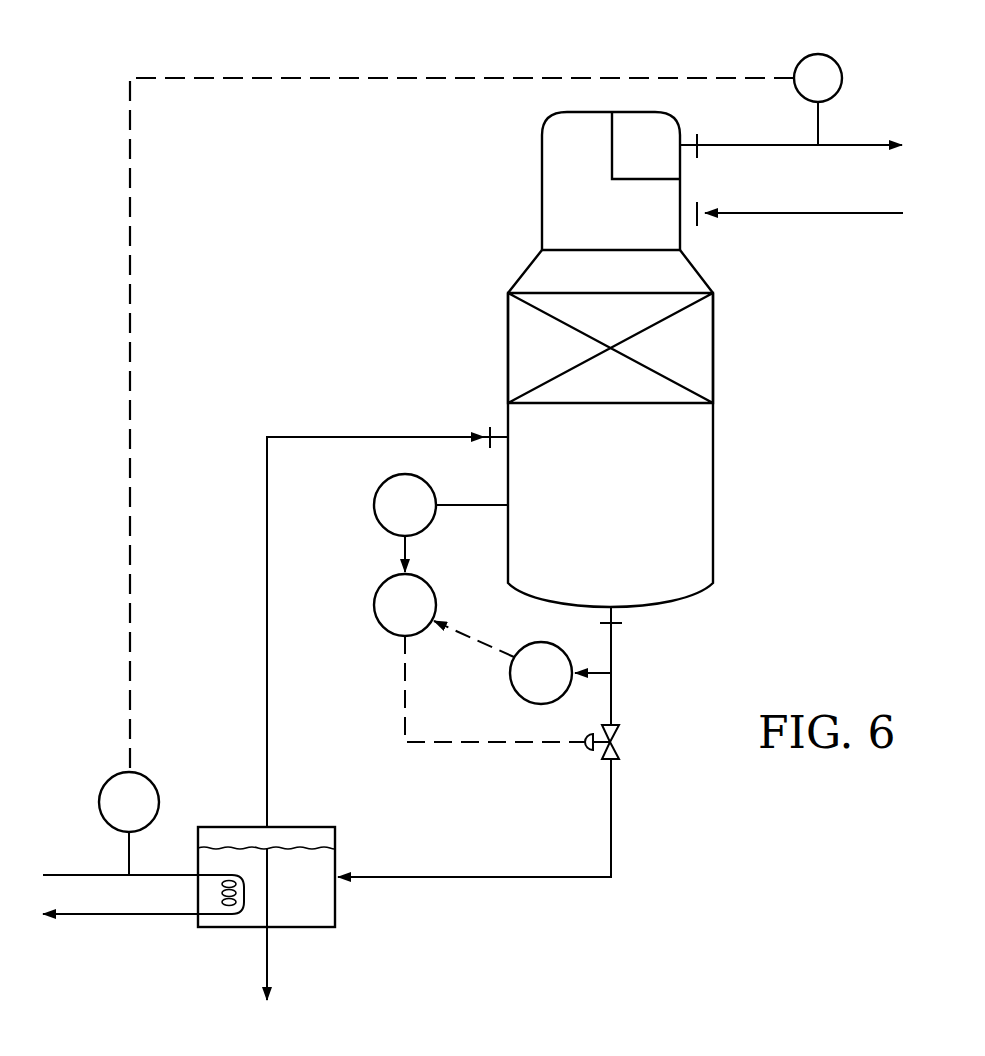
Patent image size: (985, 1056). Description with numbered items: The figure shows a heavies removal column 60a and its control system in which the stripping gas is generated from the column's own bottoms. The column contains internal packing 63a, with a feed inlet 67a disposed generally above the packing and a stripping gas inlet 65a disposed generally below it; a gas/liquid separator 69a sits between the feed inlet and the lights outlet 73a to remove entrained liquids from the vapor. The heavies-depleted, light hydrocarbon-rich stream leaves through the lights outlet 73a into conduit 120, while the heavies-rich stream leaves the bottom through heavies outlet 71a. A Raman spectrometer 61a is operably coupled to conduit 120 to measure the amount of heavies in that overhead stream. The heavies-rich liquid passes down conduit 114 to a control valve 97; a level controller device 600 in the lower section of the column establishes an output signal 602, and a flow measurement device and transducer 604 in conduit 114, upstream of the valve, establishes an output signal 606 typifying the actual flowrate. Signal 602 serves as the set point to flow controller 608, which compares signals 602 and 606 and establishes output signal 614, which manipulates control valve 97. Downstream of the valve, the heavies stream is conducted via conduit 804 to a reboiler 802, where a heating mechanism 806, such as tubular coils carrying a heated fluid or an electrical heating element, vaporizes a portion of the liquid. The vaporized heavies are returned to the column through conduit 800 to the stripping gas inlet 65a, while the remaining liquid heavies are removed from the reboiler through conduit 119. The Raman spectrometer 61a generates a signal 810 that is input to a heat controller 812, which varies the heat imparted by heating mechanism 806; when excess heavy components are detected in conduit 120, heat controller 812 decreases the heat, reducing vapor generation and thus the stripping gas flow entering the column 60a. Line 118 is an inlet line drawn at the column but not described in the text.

The heavies removal column 60a is at (536, 193).
The Raman spectrometer 61a is at (838, 62).
The internal packing 63a is at (711, 347).
The stripping gas inlet 65a is at (490, 427).
The feed inlet 67a is at (690, 222).
The gas/liquid separator 69a is at (660, 179).
The heavies outlet 71a is at (624, 625).
The lights outlet 73a is at (690, 140).
The control valve 97 is at (619, 752).
The conduit 114 is at (615, 690).
The reflux line 118 is at (848, 213).
The conduit 119 is at (270, 960).
The conduit 120 is at (848, 145).
The level controller device 600 is at (388, 482).
The output signal 602 is at (403, 556).
The flow measurement device and transducer 604 is at (530, 702).
The output signal 606 is at (480, 646).
The flow controller 608 is at (393, 637).
The output signal 614 is at (404, 716).
The conduit 800 is at (400, 437).
The reboiler 802 is at (312, 827).
The conduit 804 is at (615, 810).
The heating mechanism 806 is at (224, 920).
The signal 810 is at (400, 78).
The heat controller 812 is at (152, 783).